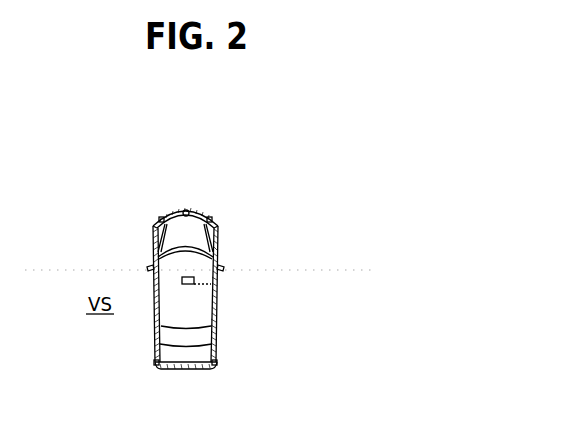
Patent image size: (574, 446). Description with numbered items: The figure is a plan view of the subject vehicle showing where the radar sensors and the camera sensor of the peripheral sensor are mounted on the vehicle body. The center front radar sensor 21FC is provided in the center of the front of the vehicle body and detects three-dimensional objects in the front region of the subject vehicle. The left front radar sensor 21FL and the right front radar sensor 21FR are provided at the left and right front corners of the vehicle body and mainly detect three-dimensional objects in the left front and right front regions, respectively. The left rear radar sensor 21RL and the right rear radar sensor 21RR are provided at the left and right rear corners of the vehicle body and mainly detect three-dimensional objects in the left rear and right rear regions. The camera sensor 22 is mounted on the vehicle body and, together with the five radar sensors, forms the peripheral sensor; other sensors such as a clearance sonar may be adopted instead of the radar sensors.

The center front radar sensor 21FC is at (186, 209).
The left front radar sensor 21FL is at (156, 219).
The right front radar sensor 21FR is at (215, 219).
The left rear radar sensor 21RL is at (154, 366).
The right rear radar sensor 21RR is at (218, 364).
The camera sensor 22 is at (209, 285).